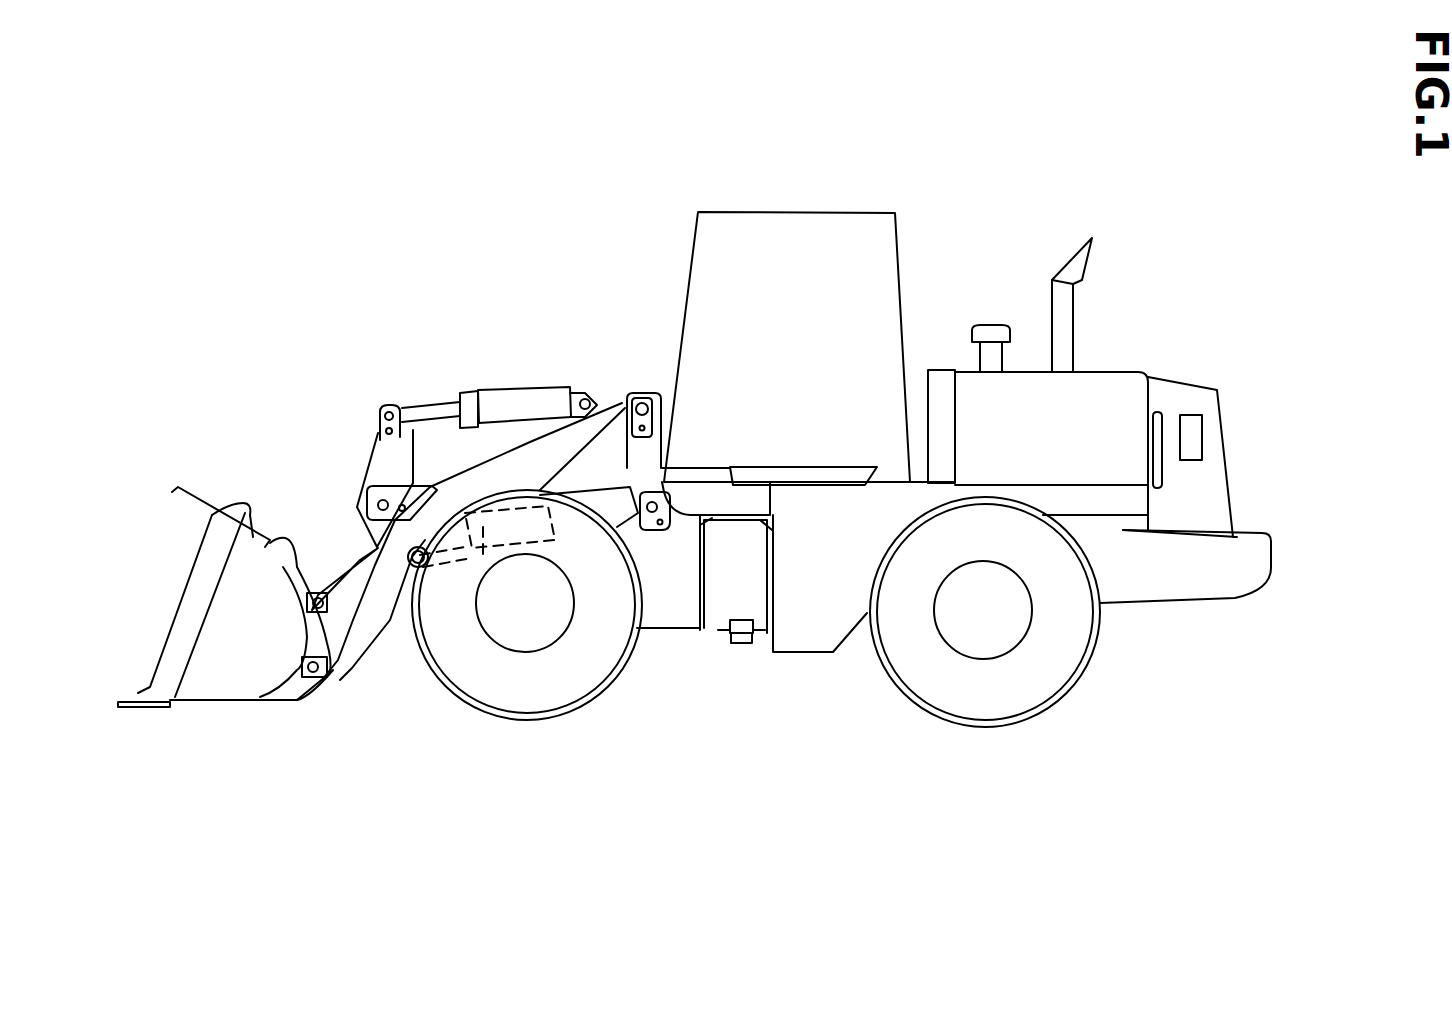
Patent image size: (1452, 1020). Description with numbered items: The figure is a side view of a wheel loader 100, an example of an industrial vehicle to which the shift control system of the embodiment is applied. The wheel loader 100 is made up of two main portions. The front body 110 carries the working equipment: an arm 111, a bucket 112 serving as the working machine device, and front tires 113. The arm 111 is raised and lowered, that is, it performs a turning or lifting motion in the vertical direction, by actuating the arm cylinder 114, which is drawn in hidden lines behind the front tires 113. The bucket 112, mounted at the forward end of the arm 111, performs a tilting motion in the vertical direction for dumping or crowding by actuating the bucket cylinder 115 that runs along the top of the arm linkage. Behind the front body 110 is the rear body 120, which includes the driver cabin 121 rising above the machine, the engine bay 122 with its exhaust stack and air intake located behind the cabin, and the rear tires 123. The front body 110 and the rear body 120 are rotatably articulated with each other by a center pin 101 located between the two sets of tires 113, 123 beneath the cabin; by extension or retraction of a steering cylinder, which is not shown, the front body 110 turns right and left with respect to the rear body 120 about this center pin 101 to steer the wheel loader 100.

The wheel loader 100 is at (751, 470).
The center pin 101 is at (742, 645).
The front body 110 is at (623, 428).
The arm 111 is at (363, 577).
The bucket 112 is at (217, 517).
The tires 113 is at (512, 683).
The arm cylinder 114 is at (473, 565).
The bucket cylinder 115 is at (512, 388).
The rear body 120 is at (1247, 558).
The driver cabin 121 is at (740, 232).
The engine bay 122 is at (1128, 395).
The tires 123 is at (1003, 695).